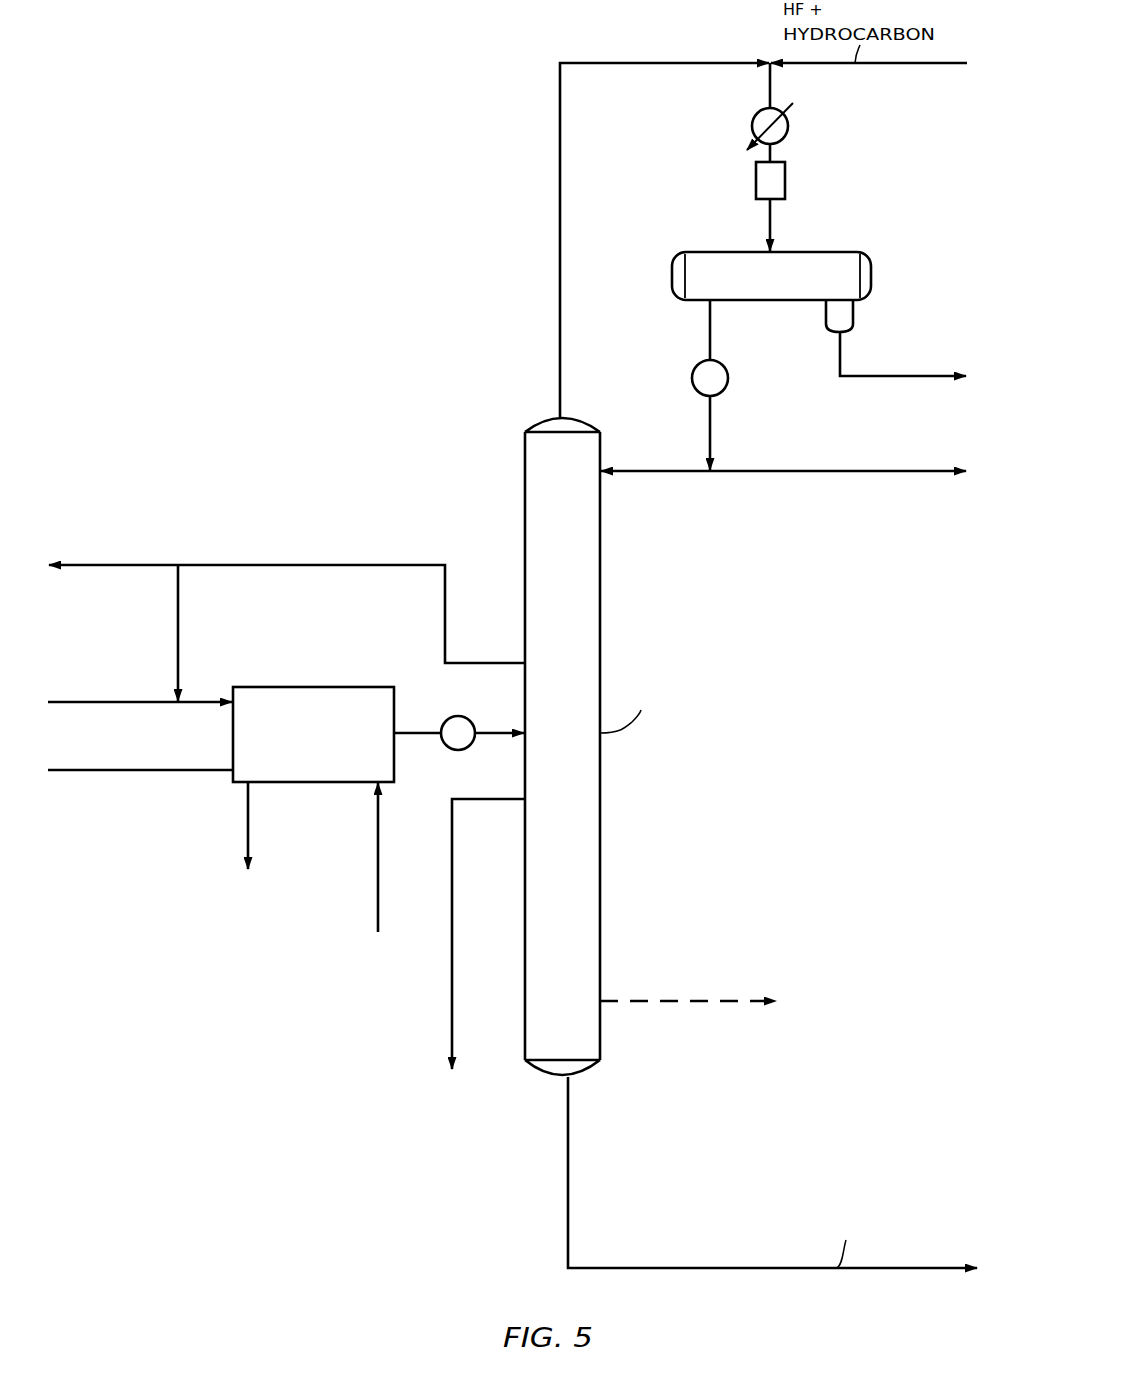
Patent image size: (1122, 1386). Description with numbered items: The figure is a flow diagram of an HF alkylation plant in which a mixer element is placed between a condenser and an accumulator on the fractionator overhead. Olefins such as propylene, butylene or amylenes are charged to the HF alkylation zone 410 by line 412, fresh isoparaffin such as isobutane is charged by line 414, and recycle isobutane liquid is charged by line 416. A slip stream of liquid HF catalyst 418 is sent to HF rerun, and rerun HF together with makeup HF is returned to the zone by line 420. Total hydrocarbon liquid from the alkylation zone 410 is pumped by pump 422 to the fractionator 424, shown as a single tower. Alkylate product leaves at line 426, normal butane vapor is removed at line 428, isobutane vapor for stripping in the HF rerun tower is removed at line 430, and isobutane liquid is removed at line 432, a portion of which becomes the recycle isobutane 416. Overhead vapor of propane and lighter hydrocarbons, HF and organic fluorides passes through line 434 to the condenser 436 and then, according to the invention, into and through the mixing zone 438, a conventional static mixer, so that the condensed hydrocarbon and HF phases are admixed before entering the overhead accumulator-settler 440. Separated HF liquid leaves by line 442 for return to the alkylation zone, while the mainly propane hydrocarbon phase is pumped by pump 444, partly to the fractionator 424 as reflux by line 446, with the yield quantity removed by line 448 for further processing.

The HF alkylation zone 410 is at (321, 687).
The olefin feed line 412 is at (73, 770).
The isoparaffin feed line 414 is at (72, 702).
The recycle isobutane liquid line 416 is at (178, 631).
The HF catalyst slip stream 418 is at (248, 830).
The makeup HF line 420 is at (378, 875).
The pump 422 is at (424, 722).
The fractionator 424 is at (579, 458).
The alkylate product line 426 is at (568, 1236).
The normal butane vapor line 428 is at (691, 1001).
The isobutane vapor line 430 is at (452, 1005).
The isobutane liquid line 432 is at (445, 601).
The fractionator overhead vapor line 434 is at (588, 63).
The condenser 436 is at (788, 135).
The mixing zone 438 is at (786, 190).
The overhead accumulator-settler 440 is at (788, 287).
The separated HF liquid line 442 is at (883, 376).
The pump 444 is at (710, 338).
The reflux line 446 is at (660, 471).
The propane yield line 448 is at (840, 471).